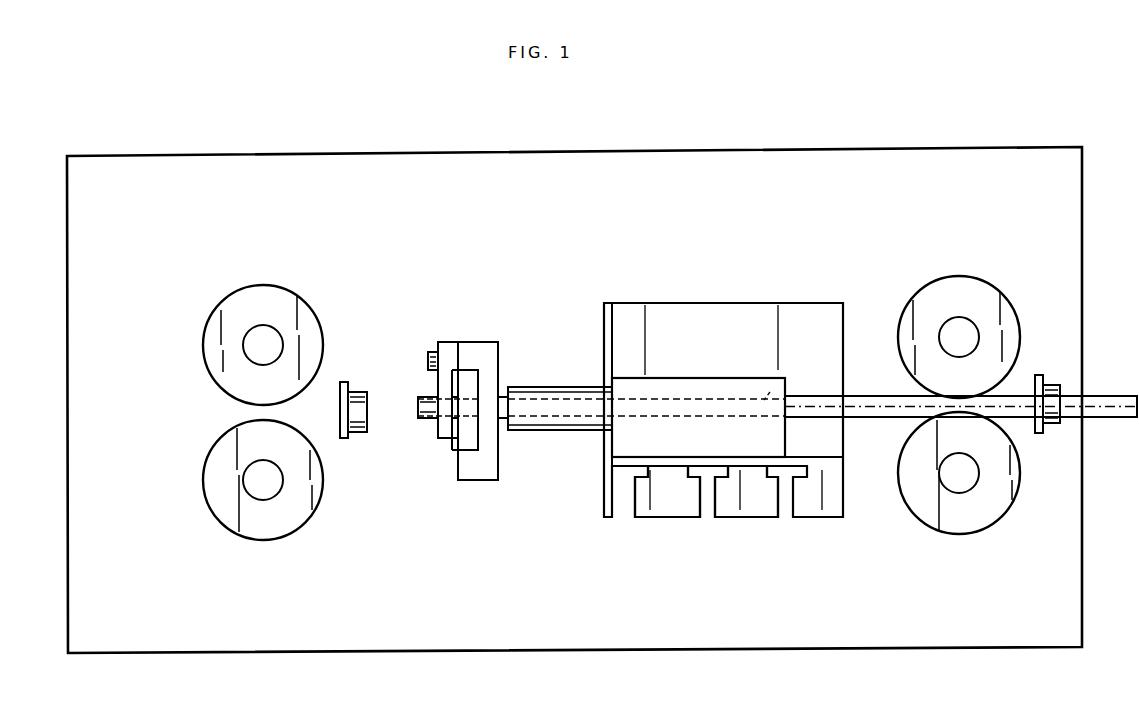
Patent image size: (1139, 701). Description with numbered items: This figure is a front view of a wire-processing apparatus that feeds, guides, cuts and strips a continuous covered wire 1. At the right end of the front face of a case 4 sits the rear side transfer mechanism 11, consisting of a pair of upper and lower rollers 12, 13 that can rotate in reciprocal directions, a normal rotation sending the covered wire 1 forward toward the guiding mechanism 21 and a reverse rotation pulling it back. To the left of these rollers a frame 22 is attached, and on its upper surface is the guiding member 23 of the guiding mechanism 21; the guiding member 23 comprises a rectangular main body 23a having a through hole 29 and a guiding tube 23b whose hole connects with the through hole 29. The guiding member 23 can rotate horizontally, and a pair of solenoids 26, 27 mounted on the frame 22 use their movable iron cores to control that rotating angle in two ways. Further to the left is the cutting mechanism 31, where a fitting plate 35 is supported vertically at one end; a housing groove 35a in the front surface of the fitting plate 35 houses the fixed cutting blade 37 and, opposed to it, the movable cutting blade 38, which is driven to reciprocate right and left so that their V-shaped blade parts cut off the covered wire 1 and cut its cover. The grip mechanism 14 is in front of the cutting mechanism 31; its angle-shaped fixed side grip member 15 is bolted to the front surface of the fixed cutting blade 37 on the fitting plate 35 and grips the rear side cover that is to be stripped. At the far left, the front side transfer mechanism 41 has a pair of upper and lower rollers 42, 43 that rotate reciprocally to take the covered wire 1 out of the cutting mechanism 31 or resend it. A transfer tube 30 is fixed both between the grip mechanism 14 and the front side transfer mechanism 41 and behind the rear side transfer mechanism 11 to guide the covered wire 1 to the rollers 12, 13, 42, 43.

The covered wire 1 is at (1103, 397).
The case 4 is at (1037, 150).
The rear side transfer mechanism 11 is at (912, 298).
The roller 12 is at (1000, 306).
The roller 13 is at (1005, 494).
The grip mechanism 14 is at (440, 341).
The fixed side grip member 15 is at (438, 386).
The guiding mechanism 21 is at (748, 378).
The frame 22 is at (817, 518).
The guiding member 23 is at (646, 381).
The main body 23a is at (563, 356).
The guiding tube 23b is at (577, 388).
The solenoid 26 is at (667, 518).
The solenoid 27 is at (740, 518).
The through hole 29 is at (766, 400).
The transfer tube 30 is at (355, 384).
The cutting mechanism 31 is at (481, 342).
The fitting plate 35 is at (478, 481).
The housing groove 35a is at (480, 442).
The fixed cutting blade 37 is at (474, 375).
The movable cutting blade 38 is at (450, 452).
The front side transfer mechanism 41 is at (297, 291).
The roller 42 is at (213, 312).
The roller 43 is at (211, 489).